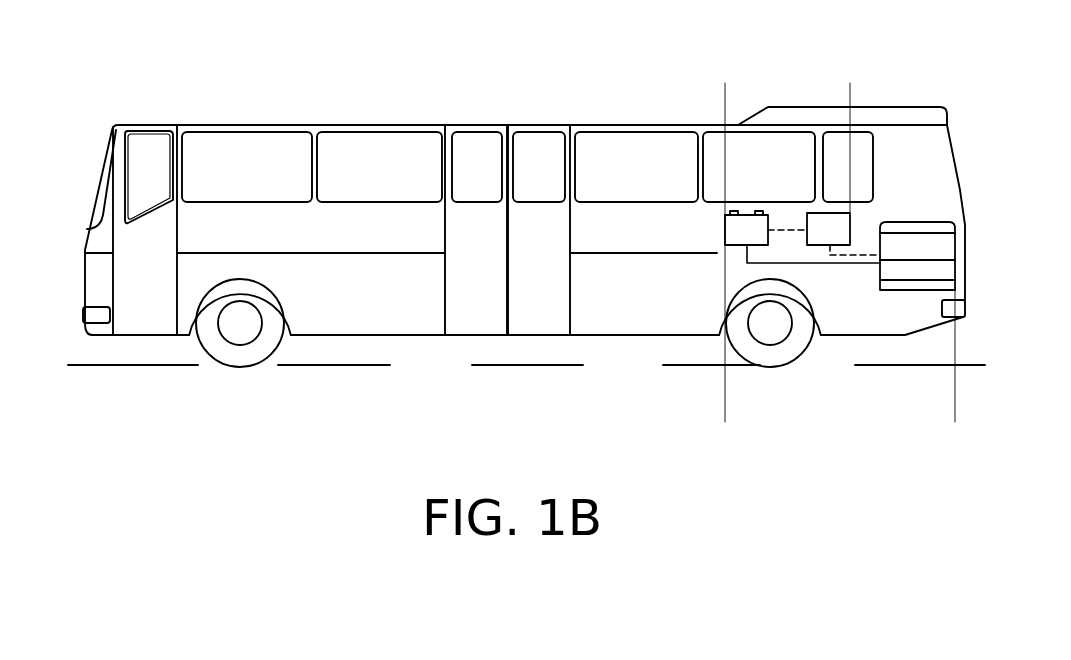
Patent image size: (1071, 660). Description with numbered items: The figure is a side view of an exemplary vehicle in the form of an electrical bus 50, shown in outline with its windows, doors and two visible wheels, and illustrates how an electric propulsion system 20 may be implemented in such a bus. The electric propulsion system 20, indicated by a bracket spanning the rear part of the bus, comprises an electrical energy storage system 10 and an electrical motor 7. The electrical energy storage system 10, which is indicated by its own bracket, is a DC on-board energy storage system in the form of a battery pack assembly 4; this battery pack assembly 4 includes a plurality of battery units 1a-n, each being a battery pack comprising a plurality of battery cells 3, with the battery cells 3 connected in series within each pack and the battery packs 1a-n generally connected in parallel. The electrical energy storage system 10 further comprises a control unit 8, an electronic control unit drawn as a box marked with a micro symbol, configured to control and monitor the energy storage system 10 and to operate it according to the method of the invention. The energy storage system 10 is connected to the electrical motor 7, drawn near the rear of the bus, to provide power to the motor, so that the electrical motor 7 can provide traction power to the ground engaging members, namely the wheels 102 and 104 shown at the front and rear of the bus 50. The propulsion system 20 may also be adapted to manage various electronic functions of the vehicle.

The bus 50 is at (513, 80).
The electrical energy storage system 10 is at (749, 230).
The control unit 8 is at (850, 230).
The battery pack assembly 4 is at (662, 315).
The battery cells 3 is at (662, 315).
The battery units 1a-n is at (725, 230).
The electrical motor 7 is at (917, 322).
The electric propulsion system 20 is at (756, 261).
The wheel 102 is at (240, 325).
The wheel 104 is at (770, 325).